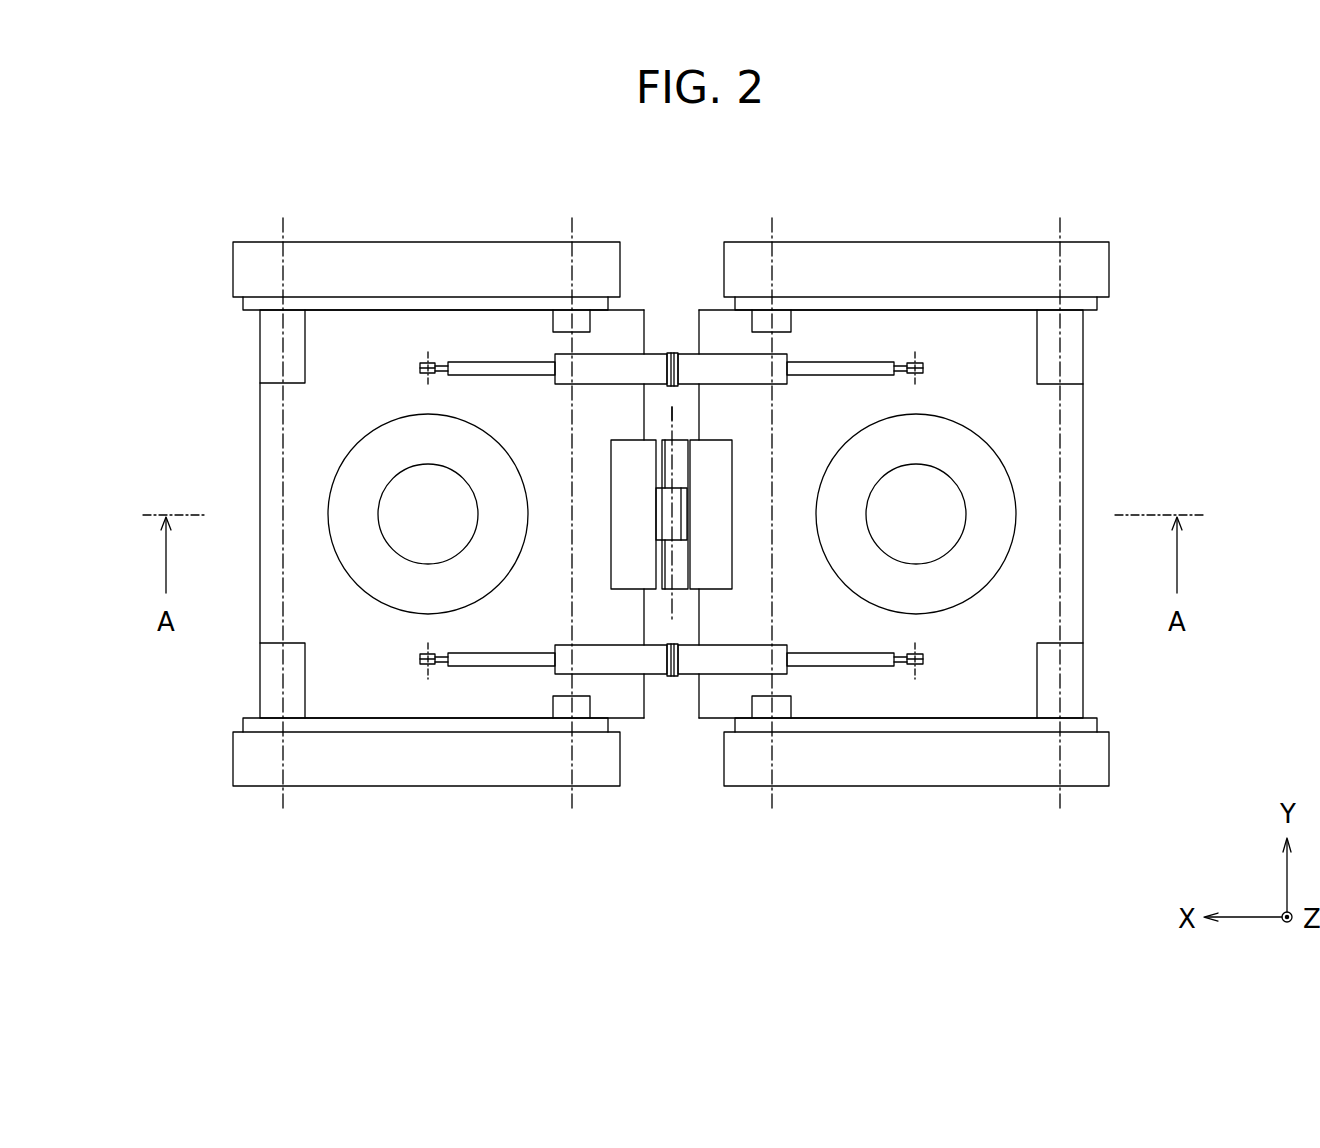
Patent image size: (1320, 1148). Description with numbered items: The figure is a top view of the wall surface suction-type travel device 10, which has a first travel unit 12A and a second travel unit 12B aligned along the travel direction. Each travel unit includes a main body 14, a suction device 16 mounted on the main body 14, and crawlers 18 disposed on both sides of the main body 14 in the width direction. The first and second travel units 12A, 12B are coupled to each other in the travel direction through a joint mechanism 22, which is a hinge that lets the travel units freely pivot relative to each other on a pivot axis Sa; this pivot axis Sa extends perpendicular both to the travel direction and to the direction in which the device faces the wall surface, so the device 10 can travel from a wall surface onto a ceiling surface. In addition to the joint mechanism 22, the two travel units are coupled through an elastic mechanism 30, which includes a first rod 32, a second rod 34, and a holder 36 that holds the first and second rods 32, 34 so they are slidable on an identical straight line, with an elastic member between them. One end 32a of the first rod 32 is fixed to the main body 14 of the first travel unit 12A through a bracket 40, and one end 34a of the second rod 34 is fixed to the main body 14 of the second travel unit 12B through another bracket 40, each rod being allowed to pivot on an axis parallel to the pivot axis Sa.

The wall surface suction-type travel device 10 is at (203, 258).
The first travel unit 12A is at (442, 216).
The second travel unit 12B is at (928, 216).
The main body 14 is at (672, 515).
The suction device 16 is at (672, 514).
The crawlers 18 is at (671, 514).
The joint mechanism 22 is at (723, 473).
The elastic mechanism 30 is at (671, 513).
The first rod 32 is at (501, 497).
The one end of first rod 32a is at (475, 539).
The second rod 34 is at (840, 497).
The one end of second rod 34a is at (855, 533).
The holder 36 is at (666, 514).
The bracket 40 is at (666, 528).
The pivot axis Sa is at (672, 411).